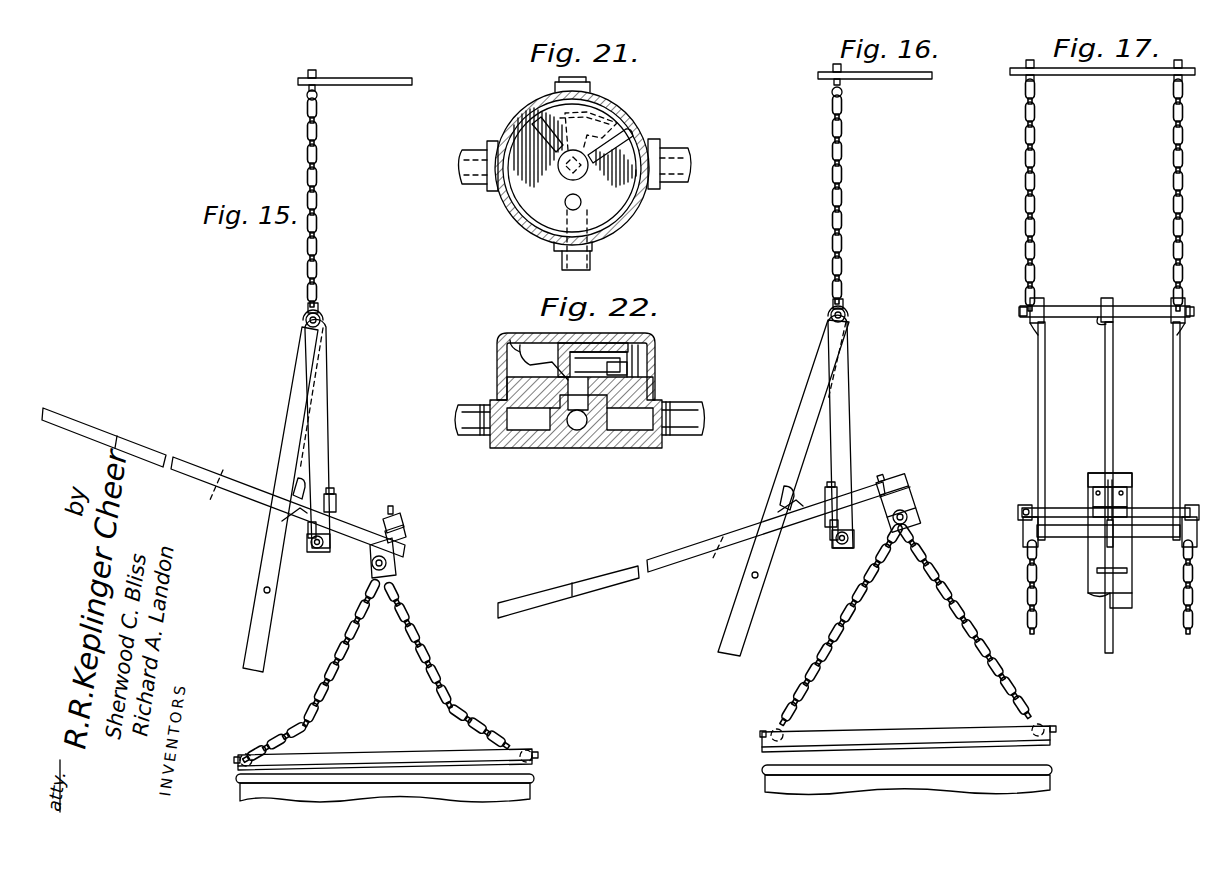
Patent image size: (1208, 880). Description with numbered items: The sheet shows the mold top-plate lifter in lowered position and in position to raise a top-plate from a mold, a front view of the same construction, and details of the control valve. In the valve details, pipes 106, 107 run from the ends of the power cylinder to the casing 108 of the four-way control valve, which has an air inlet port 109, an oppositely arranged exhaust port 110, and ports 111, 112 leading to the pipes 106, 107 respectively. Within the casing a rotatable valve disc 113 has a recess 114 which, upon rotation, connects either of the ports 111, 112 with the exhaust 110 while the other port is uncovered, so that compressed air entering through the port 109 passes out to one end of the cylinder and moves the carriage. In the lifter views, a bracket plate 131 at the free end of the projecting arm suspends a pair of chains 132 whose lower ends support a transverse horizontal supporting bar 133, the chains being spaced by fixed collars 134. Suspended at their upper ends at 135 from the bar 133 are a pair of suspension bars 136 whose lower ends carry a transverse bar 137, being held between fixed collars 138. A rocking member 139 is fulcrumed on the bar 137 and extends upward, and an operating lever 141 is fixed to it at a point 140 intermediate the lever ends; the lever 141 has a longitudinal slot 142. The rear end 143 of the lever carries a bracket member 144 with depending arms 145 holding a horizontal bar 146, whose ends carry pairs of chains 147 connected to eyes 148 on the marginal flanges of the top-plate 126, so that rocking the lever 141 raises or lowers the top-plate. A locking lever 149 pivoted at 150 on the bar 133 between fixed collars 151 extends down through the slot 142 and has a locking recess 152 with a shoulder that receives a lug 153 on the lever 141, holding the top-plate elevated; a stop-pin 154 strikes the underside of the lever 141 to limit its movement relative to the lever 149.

In FIG. 21, the pipe 106 is at (465, 155).
In FIG. 22, the pipe 106 is at (478, 388).
In FIG. 21, the pipe 107 is at (675, 152).
In FIG. 22, the pipe 107 is at (690, 405).
In FIG. 21, the casing 108 is at (512, 208).
In FIG. 22, the casing 108 is at (497, 368).
In FIG. 21, the air inlet port 109 is at (582, 204).
In FIG. 21, the exhaust port 110 is at (612, 103).
In FIG. 22, the exhaust port 110 is at (600, 345).
In FIG. 21, the port 111 is at (536, 125).
In FIG. 22, the port 111 is at (540, 362).
In FIG. 21, the port 112 is at (634, 134).
In FIG. 22, the port 112 is at (645, 392).
In FIG. 21, the rotatable valve disc 113 is at (548, 108).
In FIG. 22, the rotatable valve disc 113 is at (540, 330).
In FIG. 21, the recess 114 is at (625, 112).
In FIG. 22, the recess 114 is at (628, 364).
In FIG. 15, the top-plate 126 is at (387, 768).
In FIG. 16, the top-plate 126 is at (895, 740).
In FIG. 15, the bracket plate 131 is at (386, 79).
In FIG. 16, the bracket plate 131 is at (898, 81).
In FIG. 17, the bracket plate 131 is at (1098, 75).
In FIG. 15, the chains 132 is at (320, 152).
In FIG. 16, the chains 132 is at (846, 182).
In FIG. 17, the chains 132 is at (1037, 222).
In FIG. 15, the transverse horizontal supporting bar 133 is at (325, 318).
In FIG. 16, the transverse horizontal supporting bar 133 is at (850, 315).
In FIG. 17, the transverse horizontal supporting bar 133 is at (1094, 300).
In FIG. 17, the fixed collars 134 is at (1030, 320).
In FIG. 17, the suspension point 135 is at (1043, 305).
In FIG. 15, the suspension bars 136 is at (328, 423).
In FIG. 16, the suspension bars 136 is at (851, 402).
In FIG. 17, the suspension bars 136 is at (1038, 414).
In FIG. 15, the transverse bar 137 is at (320, 556).
In FIG. 16, the transverse bar 137 is at (846, 552).
In FIG. 17, the transverse bar 137 is at (1155, 538).
In FIG. 15, the fixed collars 138 is at (310, 544).
In FIG. 16, the fixed collars 138 is at (849, 538).
In FIG. 17, the fixed collars 138 is at (1030, 548).
In FIG. 15, the rocking member 139 is at (352, 526).
In FIG. 16, the rocking member 139 is at (830, 530).
In FIG. 17, the rocking member 139 is at (1108, 500).
In FIG. 15, the fixing point 140 is at (333, 498).
In FIG. 16, the fixing point 140 is at (835, 492).
In FIG. 15, the operating lever 141 is at (218, 458).
In FIG. 16, the operating lever 141 is at (622, 568).
In FIG. 17, the operating lever 141 is at (1124, 600).
In FIG. 15, the longitudinal slot 142 is at (208, 498).
In FIG. 16, the longitudinal slot 142 is at (699, 564).
In FIG. 17, the longitudinal slot 142 is at (1107, 542).
In FIG. 15, the rear end 143 is at (398, 514).
In FIG. 17, the rear end 143 is at (1097, 473).
In FIG. 15, the bracket member 144 is at (405, 528).
In FIG. 16, the bracket member 144 is at (897, 480).
In FIG. 17, the bracket member 144 is at (1092, 488).
In FIG. 15, the depending arms 145 is at (398, 549).
In FIG. 16, the depending arms 145 is at (912, 497).
In FIG. 17, the depending arms 145 is at (1132, 498).
In FIG. 15, the horizontal bar 146 is at (388, 565).
In FIG. 16, the horizontal bar 146 is at (910, 518).
In FIG. 17, the horizontal bar 146 is at (1050, 512).
In FIG. 15, the chains 147 is at (418, 672).
In FIG. 16, the chains 147 is at (958, 628).
In FIG. 17, the chains 147 is at (1038, 640).
In FIG. 15, the eyes 148 is at (248, 752).
In FIG. 16, the eyes 148 is at (776, 725).
In FIG. 15, the lever 149 is at (286, 404).
In FIG. 16, the lever 149 is at (792, 428).
In FIG. 17, the lever 149 is at (1113, 392).
In FIG. 15, the pivot 150 is at (302, 320).
In FIG. 16, the pivot 150 is at (828, 316).
In FIG. 17, the pivot 150 is at (1110, 300).
In FIG. 17, the fixed collars 151 is at (1108, 322).
In FIG. 15, the locking recess 152 is at (292, 513).
In FIG. 16, the locking recess 152 is at (797, 506).
In FIG. 15, the lug 153 is at (298, 480).
In FIG. 16, the lug 153 is at (786, 486).
In FIG. 15, the stop-pin 154 is at (272, 593).
In FIG. 16, the stop-pin 154 is at (758, 580).
In FIG. 17, the stop-pin 154 is at (1100, 574).